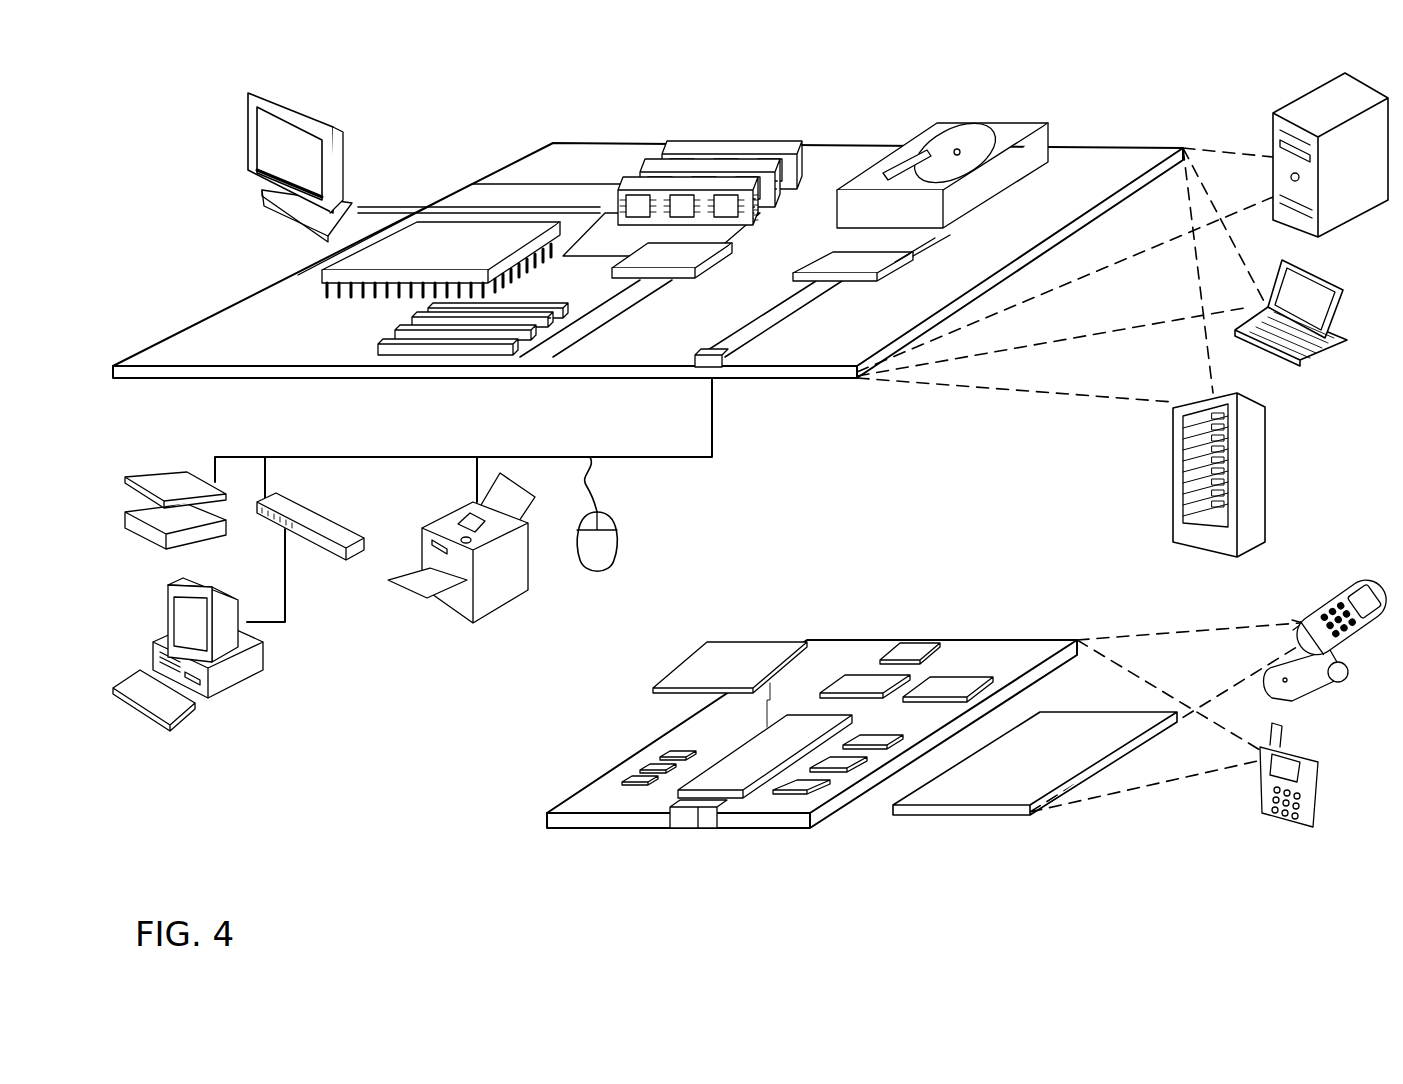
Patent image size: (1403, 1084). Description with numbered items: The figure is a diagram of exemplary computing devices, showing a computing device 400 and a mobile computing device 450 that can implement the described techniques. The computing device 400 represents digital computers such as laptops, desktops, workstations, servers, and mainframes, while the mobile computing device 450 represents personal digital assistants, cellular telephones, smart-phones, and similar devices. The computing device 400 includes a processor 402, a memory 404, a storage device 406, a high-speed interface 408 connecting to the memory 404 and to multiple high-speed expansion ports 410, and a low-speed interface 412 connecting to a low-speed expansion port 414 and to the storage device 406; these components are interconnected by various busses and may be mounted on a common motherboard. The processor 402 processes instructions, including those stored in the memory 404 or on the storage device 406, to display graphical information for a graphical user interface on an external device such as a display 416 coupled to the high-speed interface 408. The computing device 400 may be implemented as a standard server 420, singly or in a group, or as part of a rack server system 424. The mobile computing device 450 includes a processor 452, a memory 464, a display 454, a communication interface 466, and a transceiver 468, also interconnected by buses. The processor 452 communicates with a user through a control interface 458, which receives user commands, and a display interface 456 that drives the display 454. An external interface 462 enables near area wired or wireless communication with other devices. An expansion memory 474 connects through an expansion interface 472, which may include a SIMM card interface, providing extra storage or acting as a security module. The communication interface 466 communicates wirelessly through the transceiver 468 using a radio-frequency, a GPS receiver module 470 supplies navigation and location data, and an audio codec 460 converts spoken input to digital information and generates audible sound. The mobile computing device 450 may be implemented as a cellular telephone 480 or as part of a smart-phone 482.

The computing device 400 is at (457, 114).
The processor 402 is at (330, 274).
The memory 404 is at (673, 138).
The storage device 406 is at (923, 120).
The high-speed interface 408 is at (643, 255).
The high-speed expansion ports 410 is at (397, 333).
The low-speed interface 412 is at (833, 257).
The low-speed expansion port 414 is at (728, 362).
The display 416 is at (250, 92).
The standard server 420 is at (1273, 133).
The rack server system 424 is at (1170, 502).
The mobile computing device 450 is at (514, 827).
The processor 452 is at (735, 780).
The display 454 is at (992, 800).
The display interface 456 is at (806, 787).
The control interface 458 is at (870, 760).
The audio codec 460 is at (873, 740).
The external interface 462 is at (698, 818).
The memory 464 is at (643, 772).
The communication interface 466 is at (865, 682).
The transceiver 468 is at (950, 683).
The GPS receiver module 470 is at (920, 642).
The expansion interface 472 is at (790, 658).
The expansion memory 474 is at (707, 657).
The cellular telephone 480 is at (1325, 600).
The smart-phone 482 is at (1263, 787).